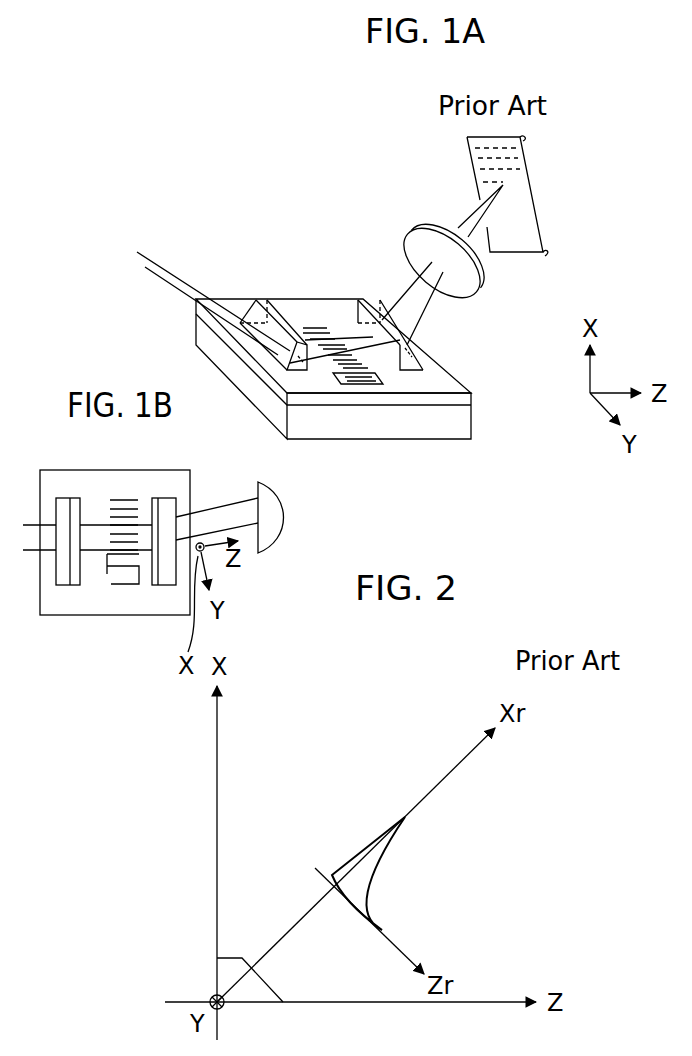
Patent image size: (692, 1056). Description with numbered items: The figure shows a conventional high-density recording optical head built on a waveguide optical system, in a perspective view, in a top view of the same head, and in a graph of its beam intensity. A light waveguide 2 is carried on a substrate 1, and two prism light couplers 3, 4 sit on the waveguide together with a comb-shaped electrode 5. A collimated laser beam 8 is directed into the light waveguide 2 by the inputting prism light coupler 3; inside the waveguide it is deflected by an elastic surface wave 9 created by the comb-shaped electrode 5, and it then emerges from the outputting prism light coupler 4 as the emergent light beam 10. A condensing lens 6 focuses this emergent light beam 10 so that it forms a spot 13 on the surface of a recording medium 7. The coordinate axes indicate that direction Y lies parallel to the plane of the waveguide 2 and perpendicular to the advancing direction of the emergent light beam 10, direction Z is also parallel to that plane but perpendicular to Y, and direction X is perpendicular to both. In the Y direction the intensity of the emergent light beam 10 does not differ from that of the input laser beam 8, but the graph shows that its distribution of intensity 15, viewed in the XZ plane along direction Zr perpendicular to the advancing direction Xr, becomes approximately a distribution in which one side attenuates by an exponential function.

In FIG. 1A, the substrate 1 is at (336, 432).
In FIG. 1A, the light waveguide 2 is at (471, 396).
In FIG. 1B, the light waveguide 2 is at (83, 615).
In FIG. 1A, the inputting prism light coupler 3 is at (273, 300).
In FIG. 1B, the inputting prism light coupler 3 is at (62, 585).
In FIG. 1A, the outputting prism light coupler 4 is at (361, 300).
In FIG. 1B, the outputting prism light coupler 4 is at (168, 497).
In FIG. 1A, the comb-shaped electrode 5 is at (373, 380).
In FIG. 1B, the comb-shaped electrode 5 is at (127, 585).
In FIG. 1A, the condensing lens 6 is at (480, 277).
In FIG. 1B, the condensing lens 6 is at (273, 538).
In FIG. 1A, the recording medium 7 is at (522, 153).
In FIG. 1A, the collimated laser beam 8 is at (190, 287).
In FIG. 1B, the collimated laser beam 8 is at (33, 553).
In FIG. 1A, the elastic surface wave 9 is at (313, 330).
In FIG. 1B, the elastic surface wave 9 is at (123, 497).
In FIG. 1A, the emergent light beam 10 is at (407, 290).
In FIG. 1B, the emergent light beam 10 is at (225, 506).
In FIG. 1A, the spot 13 is at (503, 185).
In FIG. 2, the distribution of intensity 15 is at (378, 852).